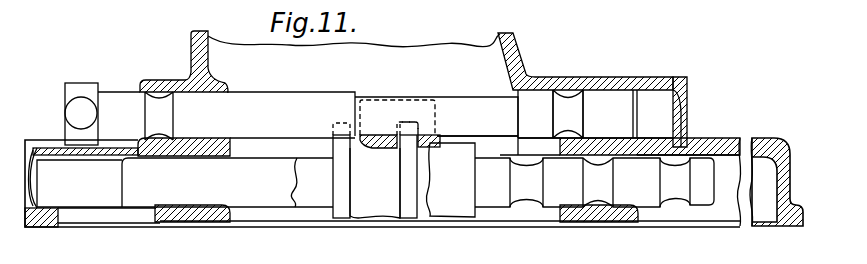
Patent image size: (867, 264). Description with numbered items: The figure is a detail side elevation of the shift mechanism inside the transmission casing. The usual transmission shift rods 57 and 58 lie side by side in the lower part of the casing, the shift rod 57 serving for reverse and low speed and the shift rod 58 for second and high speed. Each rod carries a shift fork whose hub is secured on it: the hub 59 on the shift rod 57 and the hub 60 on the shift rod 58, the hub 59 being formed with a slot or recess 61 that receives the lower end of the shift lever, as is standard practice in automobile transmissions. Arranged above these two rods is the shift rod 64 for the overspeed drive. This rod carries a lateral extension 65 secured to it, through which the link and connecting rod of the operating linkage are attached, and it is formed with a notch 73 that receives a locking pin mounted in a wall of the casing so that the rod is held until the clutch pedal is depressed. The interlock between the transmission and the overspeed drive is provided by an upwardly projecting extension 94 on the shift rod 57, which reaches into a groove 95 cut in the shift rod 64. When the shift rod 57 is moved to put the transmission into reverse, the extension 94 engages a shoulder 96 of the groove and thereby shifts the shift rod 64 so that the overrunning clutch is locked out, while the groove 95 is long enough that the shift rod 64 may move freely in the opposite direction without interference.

The shift rod 57 is at (150, 193).
The shift rod 58 is at (307, 192).
The hub 59 is at (375, 183).
The hub 60 is at (450, 180).
The slot 61 is at (354, 217).
The shift rod 64 is at (274, 97).
The lateral extension 65 is at (78, 88).
The notch 73 is at (567, 91).
The upwardly projecting extension 94 is at (436, 114).
The groove 95 is at (482, 104).
The shoulder 96 is at (357, 96).